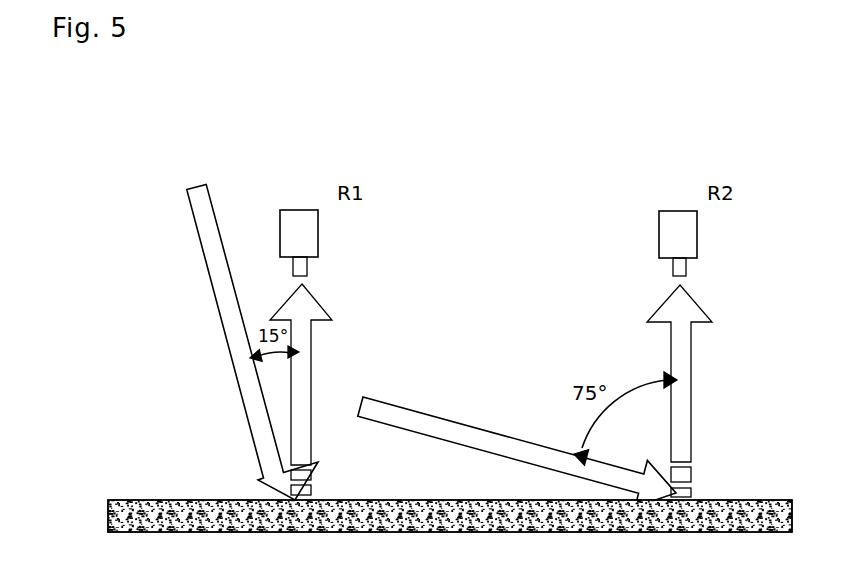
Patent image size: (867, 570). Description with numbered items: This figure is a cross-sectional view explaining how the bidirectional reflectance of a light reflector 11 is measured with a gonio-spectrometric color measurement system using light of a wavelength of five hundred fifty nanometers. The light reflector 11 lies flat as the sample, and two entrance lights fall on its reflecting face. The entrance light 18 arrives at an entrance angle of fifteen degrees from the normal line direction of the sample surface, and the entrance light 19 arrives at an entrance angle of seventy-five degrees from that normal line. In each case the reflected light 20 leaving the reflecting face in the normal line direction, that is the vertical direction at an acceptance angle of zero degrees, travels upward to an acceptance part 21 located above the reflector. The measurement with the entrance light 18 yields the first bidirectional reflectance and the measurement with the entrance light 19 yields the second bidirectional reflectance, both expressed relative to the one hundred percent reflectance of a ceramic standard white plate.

The light reflector 11 is at (146, 490).
The entrance light (entrance angle 15°) 18 is at (205, 252).
The entrance light (entrance angle 75°) 19 is at (431, 414).
The reflected light in the normal line direction 20 is at (660, 355).
The acceptance part 21 is at (670, 237).